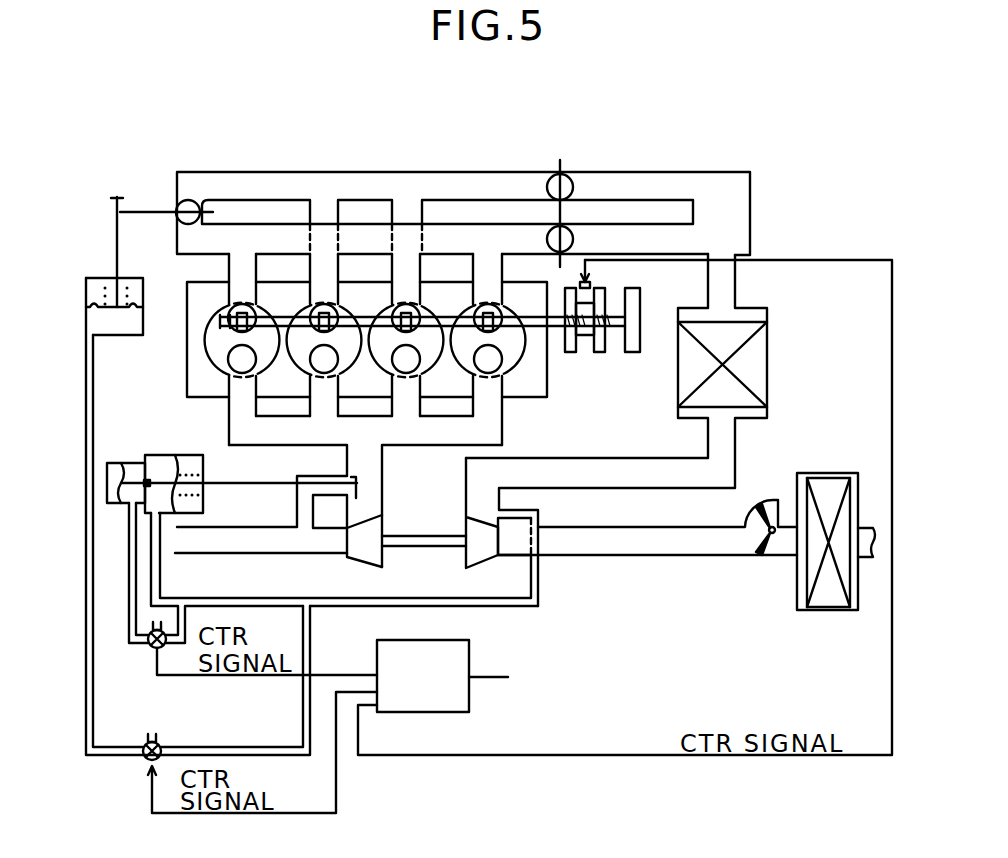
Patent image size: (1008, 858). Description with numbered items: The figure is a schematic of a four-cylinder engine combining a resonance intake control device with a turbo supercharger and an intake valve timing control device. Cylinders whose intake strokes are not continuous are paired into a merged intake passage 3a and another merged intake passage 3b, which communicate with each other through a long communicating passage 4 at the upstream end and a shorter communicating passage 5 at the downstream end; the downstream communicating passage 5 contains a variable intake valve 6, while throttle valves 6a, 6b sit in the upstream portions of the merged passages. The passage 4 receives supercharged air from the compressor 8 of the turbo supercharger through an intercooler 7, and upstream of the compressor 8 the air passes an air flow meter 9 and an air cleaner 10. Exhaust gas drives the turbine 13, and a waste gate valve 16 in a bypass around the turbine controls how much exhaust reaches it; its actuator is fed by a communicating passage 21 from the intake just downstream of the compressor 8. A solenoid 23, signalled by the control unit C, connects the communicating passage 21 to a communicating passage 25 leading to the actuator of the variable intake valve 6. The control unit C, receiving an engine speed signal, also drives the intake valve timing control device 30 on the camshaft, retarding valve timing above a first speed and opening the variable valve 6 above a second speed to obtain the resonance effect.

The merged intake passage 3a is at (440, 237).
The merged intake passage 3b is at (342, 182).
The communicating passage 4 is at (658, 277).
The communicating passage 5 is at (187, 235).
The variable intake valve 6 is at (193, 200).
The throttle valve 6a is at (571, 187).
The throttle valve 6b is at (573, 239).
The intercooler 7 is at (767, 360).
The compressor 8 is at (483, 563).
The air flow meter 9 is at (773, 545).
The air cleaner 10 is at (832, 611).
The turbine 13 is at (367, 565).
The waste gate valve 16 is at (360, 480).
The communicating passage 21 is at (296, 598).
The three-way solenoid 23 is at (148, 646).
The communicating passage 25 is at (85, 633).
The intake valve timing control device 30 is at (587, 362).
The control unit C is at (423, 712).